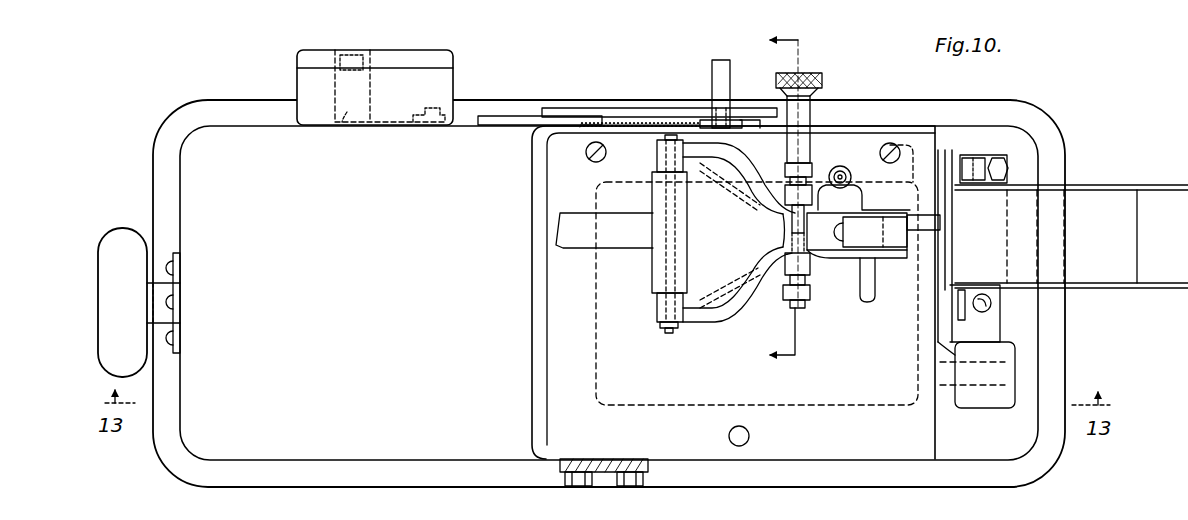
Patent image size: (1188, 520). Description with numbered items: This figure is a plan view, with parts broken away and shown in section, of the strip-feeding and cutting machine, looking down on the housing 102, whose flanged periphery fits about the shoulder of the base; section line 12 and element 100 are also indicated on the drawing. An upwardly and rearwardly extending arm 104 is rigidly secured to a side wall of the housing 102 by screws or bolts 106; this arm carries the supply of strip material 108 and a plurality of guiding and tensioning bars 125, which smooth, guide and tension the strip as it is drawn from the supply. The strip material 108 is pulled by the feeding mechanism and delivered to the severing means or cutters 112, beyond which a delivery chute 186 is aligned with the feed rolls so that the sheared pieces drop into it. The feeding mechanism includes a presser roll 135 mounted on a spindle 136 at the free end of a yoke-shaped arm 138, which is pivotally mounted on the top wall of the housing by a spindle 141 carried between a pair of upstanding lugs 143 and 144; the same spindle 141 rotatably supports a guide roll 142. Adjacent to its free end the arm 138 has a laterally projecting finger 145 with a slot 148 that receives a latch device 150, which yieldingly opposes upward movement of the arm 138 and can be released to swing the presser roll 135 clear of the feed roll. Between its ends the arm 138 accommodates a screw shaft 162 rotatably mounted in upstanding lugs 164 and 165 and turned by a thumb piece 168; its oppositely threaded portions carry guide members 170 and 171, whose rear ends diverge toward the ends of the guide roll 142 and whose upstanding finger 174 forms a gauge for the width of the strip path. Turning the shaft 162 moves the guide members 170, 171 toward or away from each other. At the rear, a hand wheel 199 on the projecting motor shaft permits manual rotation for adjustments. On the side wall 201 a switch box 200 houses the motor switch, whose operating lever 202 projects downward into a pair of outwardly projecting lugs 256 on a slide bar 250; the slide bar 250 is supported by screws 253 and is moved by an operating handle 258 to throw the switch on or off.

The section line 12- 12 is at (793, 203).
The jaw block 100 is at (853, 270).
The housing 102 is at (151, 444).
The arm 104 is at (612, 460).
The screws or bolts 106 is at (622, 488).
The strip material 108 is at (572, 226).
The severing means or cutters 112 is at (927, 320).
The guiding and tensioning bars 125 is at (889, 510).
The presser roll 135 is at (922, 232).
The spindle 136 is at (880, 262).
The arm 138 is at (755, 230).
The spindle 141 is at (668, 334).
The guide roll 142 is at (652, 263).
The upstanding lug 143 is at (657, 160).
The upstanding lug 144 is at (655, 298).
The laterally projecting finger 145 is at (842, 204).
The slot 148 is at (858, 172).
The latch device 150 is at (840, 166).
The screw shaft 162 is at (812, 110).
The upstanding lug 164 is at (780, 310).
The upstanding lug 165 is at (820, 121).
The thumb piece 168 is at (815, 79).
The guide member 170 is at (772, 268).
The guide member 171 is at (780, 192).
The upstanding finger 174 is at (727, 510).
The delivery chute 186 is at (1071, 236).
The hand wheel 199 is at (100, 312).
The switch box 200 is at (397, 92).
The side wall 201 is at (236, 126).
The operating lever 202 is at (360, 50).
The slide bar 250 is at (735, 128).
The screws 253 is at (440, 108).
The outwardly projecting lugs 256 is at (350, 122).
The operating handle 258 is at (712, 66).